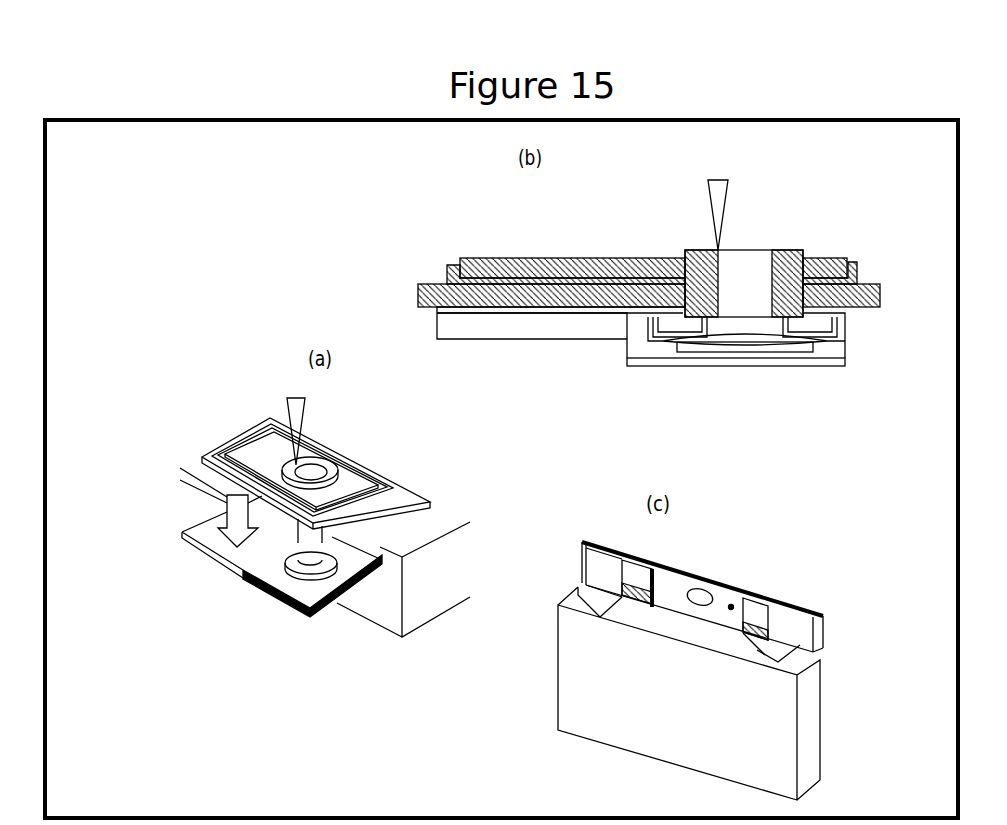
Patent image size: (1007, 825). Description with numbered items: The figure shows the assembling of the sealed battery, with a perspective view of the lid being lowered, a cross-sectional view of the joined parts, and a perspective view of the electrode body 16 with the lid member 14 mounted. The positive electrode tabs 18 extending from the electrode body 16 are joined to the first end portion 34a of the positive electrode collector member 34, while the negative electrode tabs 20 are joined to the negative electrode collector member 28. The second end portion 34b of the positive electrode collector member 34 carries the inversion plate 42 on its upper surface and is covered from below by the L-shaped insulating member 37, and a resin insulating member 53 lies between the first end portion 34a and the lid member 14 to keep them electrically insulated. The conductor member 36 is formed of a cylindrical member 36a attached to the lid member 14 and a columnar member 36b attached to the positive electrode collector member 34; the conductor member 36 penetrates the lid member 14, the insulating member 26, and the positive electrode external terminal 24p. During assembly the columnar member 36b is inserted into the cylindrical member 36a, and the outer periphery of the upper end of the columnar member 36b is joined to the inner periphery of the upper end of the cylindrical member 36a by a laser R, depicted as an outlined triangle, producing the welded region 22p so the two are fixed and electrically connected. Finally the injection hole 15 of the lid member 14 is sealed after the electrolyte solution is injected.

The lid member 14 is at (428, 283).
The injection hole 15 is at (729, 609).
The electrode body 16 is at (440, 569).
The positive electrode tabs 18 is at (752, 648).
The negative electrode tabs 20 is at (630, 607).
The welded portion 22p is at (626, 222).
The positive electrode external terminal 24p is at (576, 258).
The insulating member 26 is at (443, 276).
The negative electrode collector member 28 is at (600, 568).
The positive electrode collector member 34 is at (622, 342).
The first end portion 34a is at (497, 340).
The second end portion 34b is at (703, 368).
The conductor member 36 is at (738, 197).
The cylindrical member 36a is at (787, 250).
The columnar member 36b is at (745, 250).
The insulating member 37 is at (755, 368).
The inversion plate 42 is at (783, 353).
The insulating member 53 is at (432, 312).
The laser R is at (706, 189).